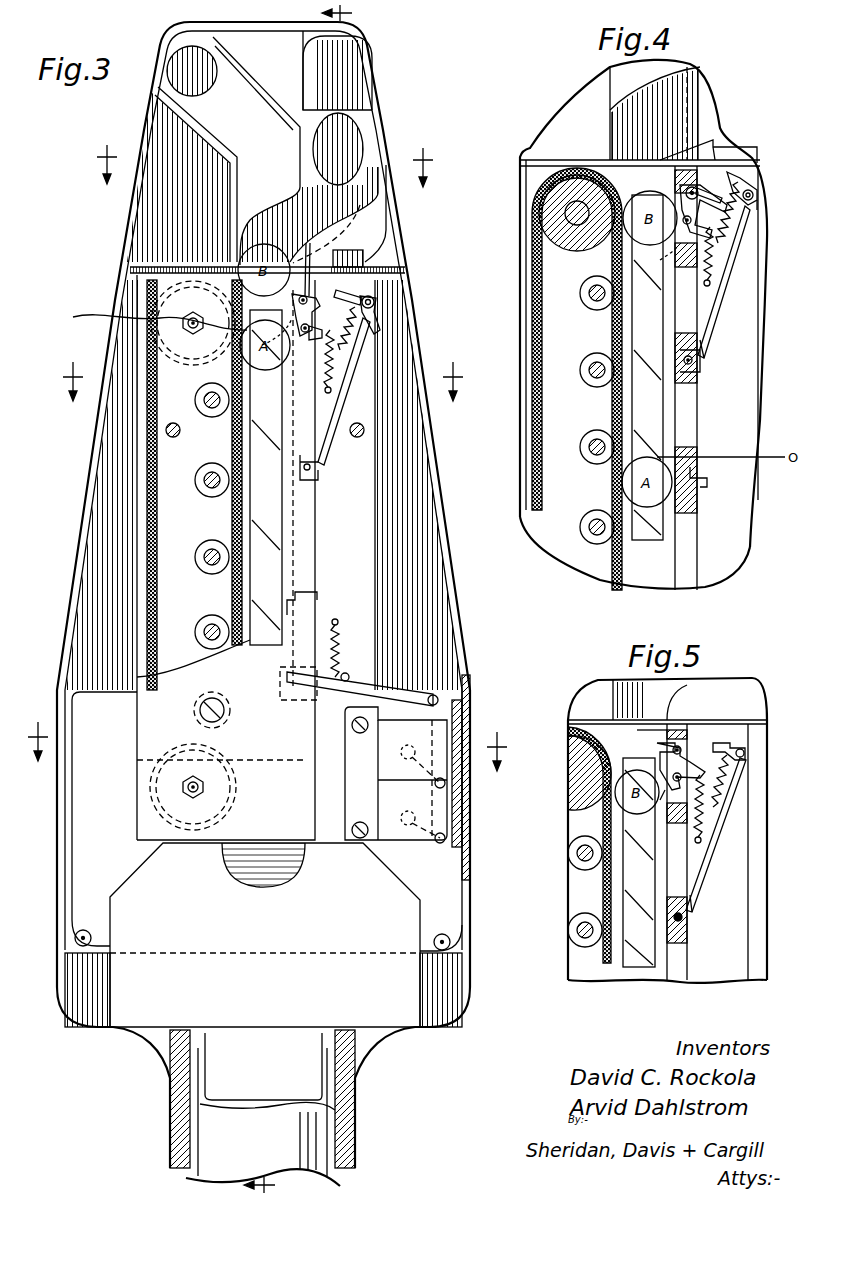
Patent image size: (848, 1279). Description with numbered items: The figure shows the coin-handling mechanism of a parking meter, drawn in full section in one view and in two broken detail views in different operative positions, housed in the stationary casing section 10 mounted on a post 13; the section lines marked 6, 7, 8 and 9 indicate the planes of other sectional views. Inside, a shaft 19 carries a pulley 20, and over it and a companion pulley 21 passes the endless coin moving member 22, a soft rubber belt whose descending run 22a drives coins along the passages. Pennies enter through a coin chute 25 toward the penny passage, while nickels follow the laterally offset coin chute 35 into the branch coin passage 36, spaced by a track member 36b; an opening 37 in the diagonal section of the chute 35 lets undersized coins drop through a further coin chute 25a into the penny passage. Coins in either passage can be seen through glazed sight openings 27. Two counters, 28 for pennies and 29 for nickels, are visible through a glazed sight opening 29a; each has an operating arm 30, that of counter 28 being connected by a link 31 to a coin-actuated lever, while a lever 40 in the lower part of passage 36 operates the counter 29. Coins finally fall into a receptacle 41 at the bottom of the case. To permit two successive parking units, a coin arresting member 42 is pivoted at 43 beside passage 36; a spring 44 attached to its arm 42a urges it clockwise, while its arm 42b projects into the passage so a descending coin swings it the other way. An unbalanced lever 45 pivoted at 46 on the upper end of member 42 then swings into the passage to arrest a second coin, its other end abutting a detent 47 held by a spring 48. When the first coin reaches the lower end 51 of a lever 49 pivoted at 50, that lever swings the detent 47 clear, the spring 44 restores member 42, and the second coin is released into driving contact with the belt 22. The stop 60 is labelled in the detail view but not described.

In FIG. 3, the stationary casing section 10 is at (461, 605).
In FIG. 4, the stationary casing section 10 is at (551, 118).
In FIG. 5, the stationary casing section 10 is at (755, 690).
In FIG. 3, the post 13 is at (312, 1143).
In FIG. 3, the shaft 19 is at (185, 790).
In FIG. 3, the pulley 20 is at (250, 781).
In FIG. 3, the companion pulley 21 is at (172, 340).
In FIG. 4, the companion pulley 21 is at (587, 240).
In FIG. 5, the companion pulley 21 is at (587, 783).
In FIG. 3, the endless coin moving member 22 is at (156, 480).
In FIG. 4, the endless coin moving member 22 is at (537, 335).
In FIG. 3, the run of the coin moving member 22a is at (231, 452).
In FIG. 3, the coin chute 25 is at (190, 72).
In FIG. 4, the coin chute 25 is at (688, 68).
In FIG. 3, the coin chute 25a is at (352, 208).
In FIG. 3, the glazed sight openings 27 is at (268, 516).
In FIG. 4, the glazed sight openings 27 is at (653, 403).
In FIG. 5, the glazed sight openings 27 is at (633, 890).
In FIG. 3, the coin counter 28 is at (405, 840).
In FIG. 3, the coin counter 29 is at (393, 733).
In FIG. 3, the glazed sight opening 29a is at (462, 745).
In FIG. 3, the operating arm 30 is at (405, 840).
In FIG. 3, the link 31 is at (445, 813).
In FIG. 3, the coin chute 35 is at (355, 100).
In FIG. 4, the coin chute 35 is at (698, 100).
In FIG. 5, the coin chute 35 is at (680, 695).
In FIG. 4, the branch coin passage 36 is at (655, 178).
In FIG. 5, the branch coin passage 36 is at (637, 730).
In FIG. 4, the spacing or track member 36b is at (683, 413).
In FIG. 5, the spacing or track member 36b is at (678, 873).
In FIG. 3, the opening 37 is at (350, 145).
In FIG. 3, the lever 40 is at (365, 683).
In FIG. 4, the lever 40 is at (696, 189).
In FIG. 3, the receptacle 41 is at (346, 1011).
In FIG. 3, the coin arresting member 42 is at (311, 315).
In FIG. 4, the coin arresting member 42 is at (712, 224).
In FIG. 5, the coin arresting member 42 is at (742, 763).
In FIG. 3, the arm 42a is at (325, 327).
In FIG. 4, the arm 42a is at (707, 240).
In FIG. 5, the arm 42a is at (733, 777).
In FIG. 3, the arm 42b is at (271, 341).
In FIG. 4, the arm 42b is at (677, 247).
In FIG. 5, the arm 42b is at (663, 803).
In FIG. 3, the pivot 43 is at (315, 363).
In FIG. 4, the pivot 43 is at (717, 263).
In FIG. 5, the pivot 43 is at (712, 807).
In FIG. 3, the spring 44 is at (372, 330).
In FIG. 4, the spring 44 is at (733, 280).
In FIG. 5, the spring 44 is at (717, 840).
In FIG. 3, the lever 45 is at (340, 290).
In FIG. 4, the lever 45 is at (735, 190).
In FIG. 5, the lever 45 is at (687, 747).
In FIG. 3, the pivot 46 is at (305, 260).
In FIG. 5, the pivot 46 is at (680, 753).
In FIG. 3, the detent 47 is at (374, 300).
In FIG. 4, the detent 47 is at (752, 186).
In FIG. 5, the detent 47 is at (745, 747).
In FIG. 3, the spring 48 is at (357, 332).
In FIG. 4, the spring 48 is at (740, 214).
In FIG. 5, the spring 48 is at (722, 787).
In FIG. 3, the lever 49 is at (327, 467).
In FIG. 4, the lever 49 is at (707, 323).
In FIG. 5, the lever 49 is at (697, 888).
In FIG. 3, the pivot 50 is at (312, 472).
In FIG. 4, the pivot 50 is at (692, 360).
In FIG. 5, the pivot 50 is at (682, 917).
In FIG. 3, the lower end 51 is at (317, 605).
In FIG. 4, the lower end 51 is at (703, 483).
In FIG. 4, the stop 60 is at (757, 204).
In FIG. 3, the section line 6 is at (304, 600).
In FIG. 3, the section line 7 is at (267, 746).
In FIG. 3, the section line 8 is at (259, 381).
In FIG. 3, the section line 9 is at (265, 166).